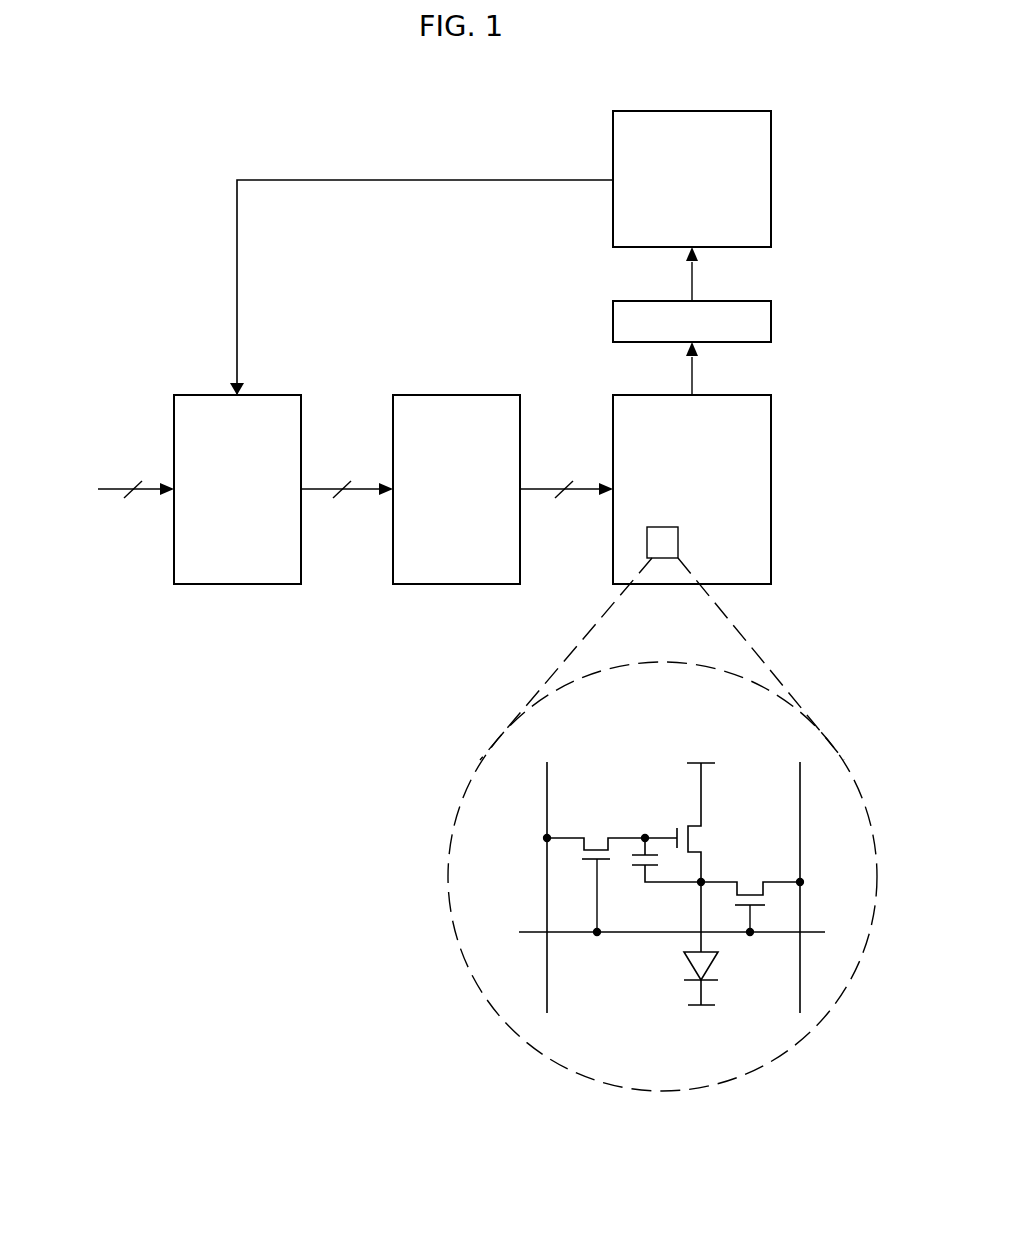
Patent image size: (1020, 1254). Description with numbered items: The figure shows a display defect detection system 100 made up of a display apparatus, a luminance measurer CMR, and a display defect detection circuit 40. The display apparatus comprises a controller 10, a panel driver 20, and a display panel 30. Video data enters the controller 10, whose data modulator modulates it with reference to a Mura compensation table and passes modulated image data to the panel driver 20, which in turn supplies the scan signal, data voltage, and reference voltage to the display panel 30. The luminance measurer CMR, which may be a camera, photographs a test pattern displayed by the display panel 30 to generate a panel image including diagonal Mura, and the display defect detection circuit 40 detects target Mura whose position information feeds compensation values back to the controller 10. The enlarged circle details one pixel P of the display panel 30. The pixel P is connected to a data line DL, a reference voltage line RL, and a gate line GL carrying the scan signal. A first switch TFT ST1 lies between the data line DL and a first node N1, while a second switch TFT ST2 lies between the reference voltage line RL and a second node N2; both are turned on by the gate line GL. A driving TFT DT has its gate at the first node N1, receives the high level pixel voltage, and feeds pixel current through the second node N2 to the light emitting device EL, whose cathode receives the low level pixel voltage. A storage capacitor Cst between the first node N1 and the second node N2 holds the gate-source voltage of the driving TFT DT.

The display defect detection system 100 is at (148, 120).
The controller 10 is at (226, 501).
The panel driver 20 is at (445, 501).
The display panel 30 is at (681, 501).
The display defect detection circuit 40 is at (681, 193).
The luminance measurer CMR is at (672, 330).
The pixel P is at (662, 542).
The data line DL is at (578, 789).
The reference voltage line RL is at (831, 821).
The gate line GL is at (524, 990).
The first switch TFT ST1 is at (595, 874).
The second switch TFT ST2 is at (752, 896).
The driving TFT DT is at (686, 808).
The storage capacitor Cst is at (655, 863).
The first node N1 is at (646, 827).
The second node N2 is at (713, 893).
The light emitting device EL is at (711, 956).